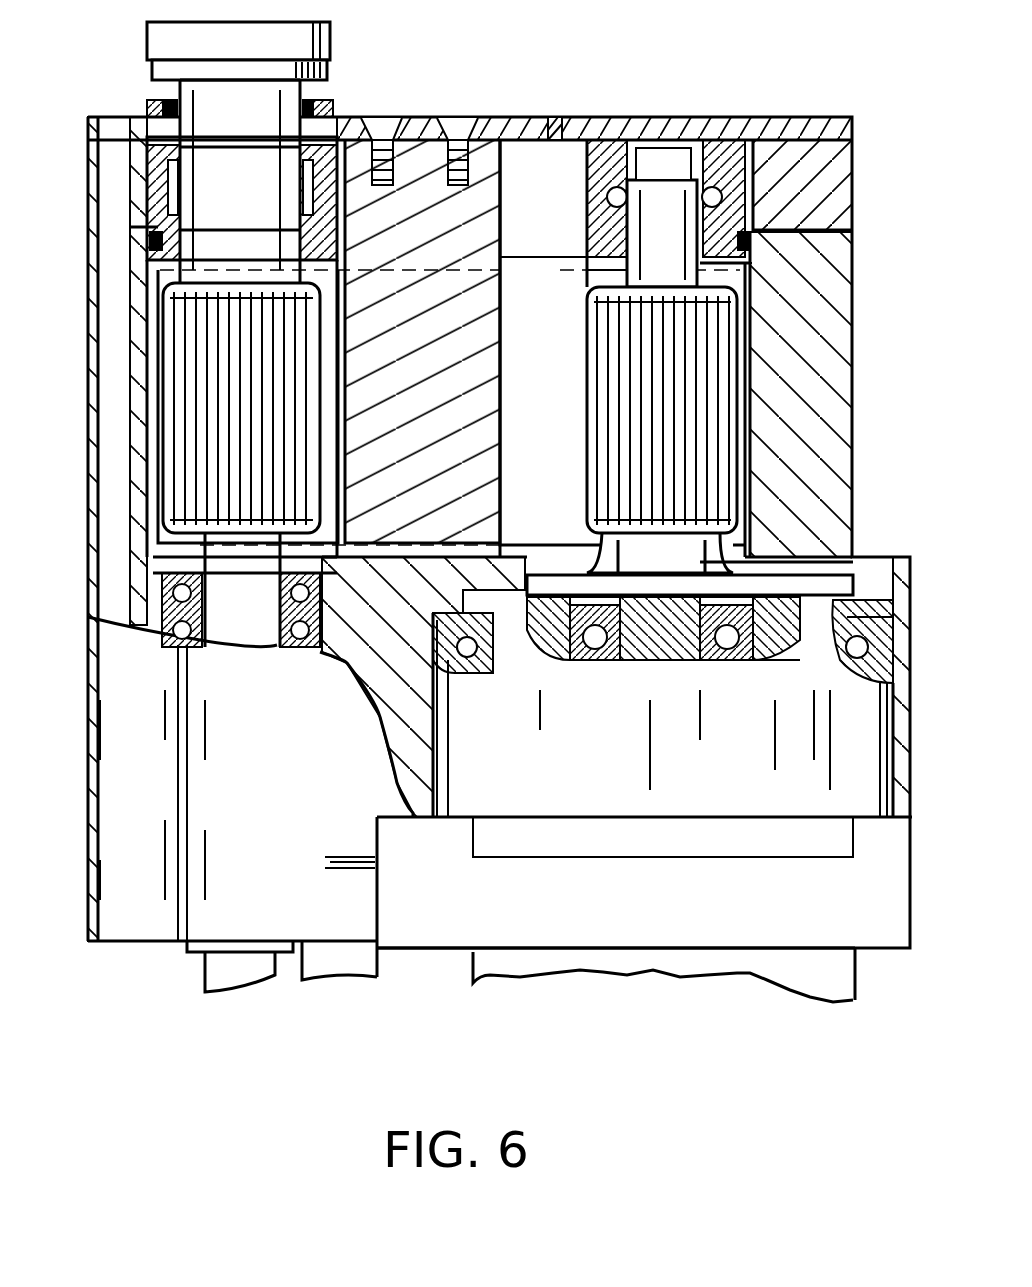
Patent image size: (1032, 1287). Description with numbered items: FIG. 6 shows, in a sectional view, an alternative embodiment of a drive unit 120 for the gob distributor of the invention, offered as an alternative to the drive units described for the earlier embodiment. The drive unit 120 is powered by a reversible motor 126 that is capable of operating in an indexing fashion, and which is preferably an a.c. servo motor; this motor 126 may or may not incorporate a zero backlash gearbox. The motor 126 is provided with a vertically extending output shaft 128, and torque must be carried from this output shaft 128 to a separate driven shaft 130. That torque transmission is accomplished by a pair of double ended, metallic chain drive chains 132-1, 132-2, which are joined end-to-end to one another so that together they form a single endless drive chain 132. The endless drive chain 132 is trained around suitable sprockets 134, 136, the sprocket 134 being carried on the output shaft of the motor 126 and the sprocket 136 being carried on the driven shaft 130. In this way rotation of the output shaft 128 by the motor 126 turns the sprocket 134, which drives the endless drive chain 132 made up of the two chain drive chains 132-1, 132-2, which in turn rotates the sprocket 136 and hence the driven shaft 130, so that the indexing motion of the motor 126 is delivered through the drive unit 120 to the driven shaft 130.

The drive unit 120 is at (852, 308).
The motor 126 is at (858, 983).
The output shaft 128 is at (752, 262).
The driven shaft 130 is at (195, 265).
The endless drive chain 132 is at (487, 270).
The chain drive chain 132-1 is at (567, 270).
The chain drive chain 132-2 is at (362, 270).
The sprocket 134 is at (705, 441).
The sprocket 136 is at (187, 481).